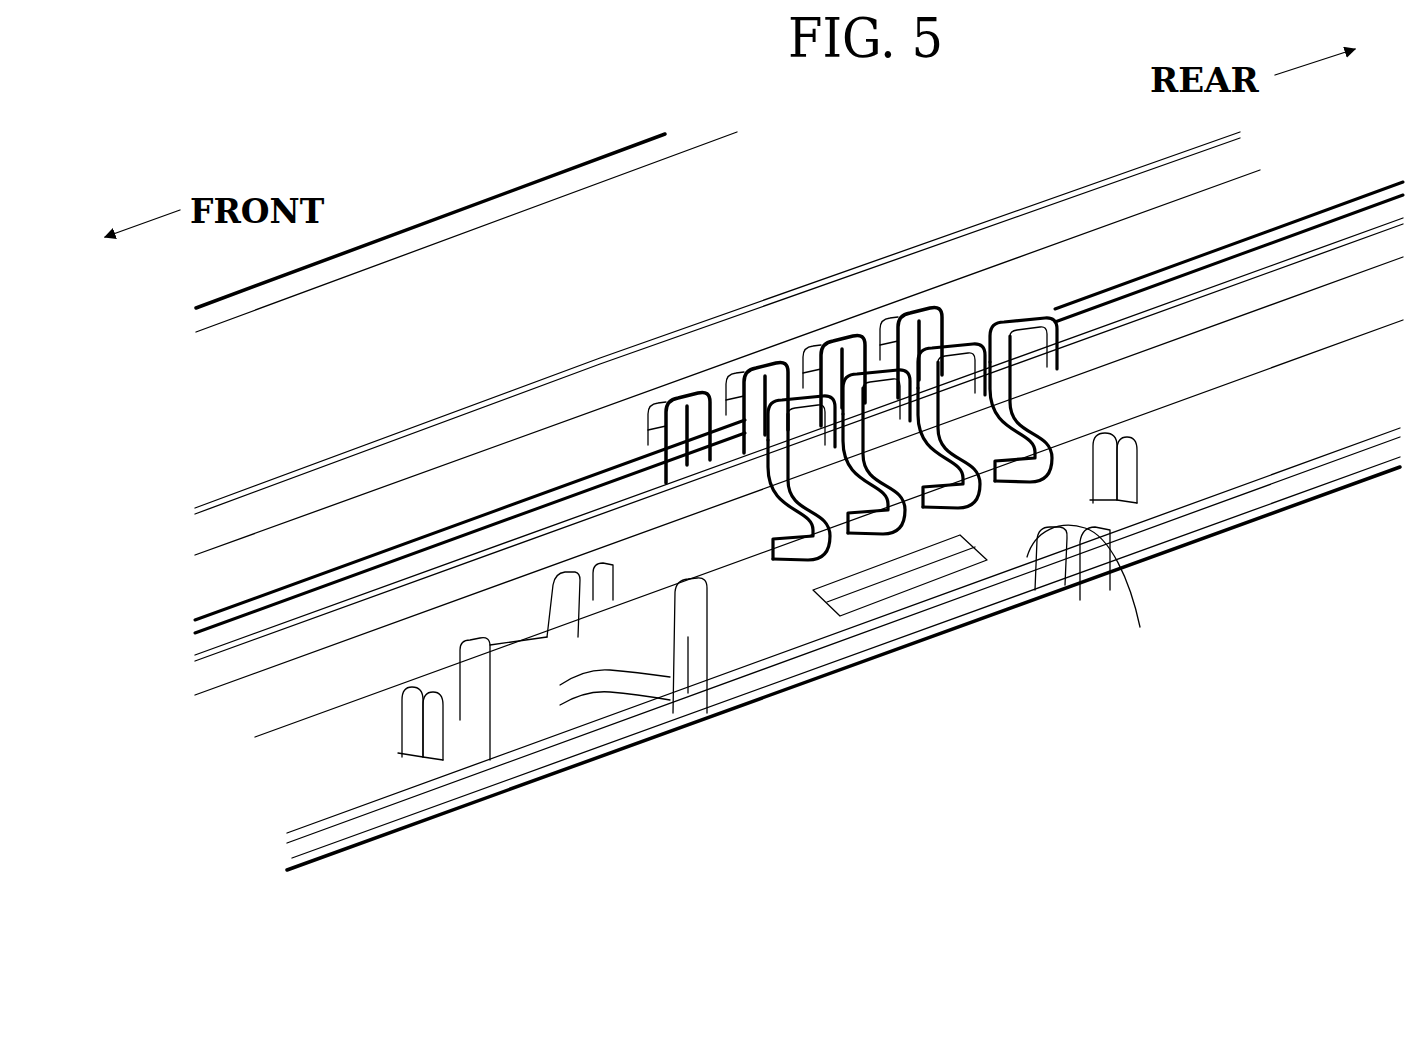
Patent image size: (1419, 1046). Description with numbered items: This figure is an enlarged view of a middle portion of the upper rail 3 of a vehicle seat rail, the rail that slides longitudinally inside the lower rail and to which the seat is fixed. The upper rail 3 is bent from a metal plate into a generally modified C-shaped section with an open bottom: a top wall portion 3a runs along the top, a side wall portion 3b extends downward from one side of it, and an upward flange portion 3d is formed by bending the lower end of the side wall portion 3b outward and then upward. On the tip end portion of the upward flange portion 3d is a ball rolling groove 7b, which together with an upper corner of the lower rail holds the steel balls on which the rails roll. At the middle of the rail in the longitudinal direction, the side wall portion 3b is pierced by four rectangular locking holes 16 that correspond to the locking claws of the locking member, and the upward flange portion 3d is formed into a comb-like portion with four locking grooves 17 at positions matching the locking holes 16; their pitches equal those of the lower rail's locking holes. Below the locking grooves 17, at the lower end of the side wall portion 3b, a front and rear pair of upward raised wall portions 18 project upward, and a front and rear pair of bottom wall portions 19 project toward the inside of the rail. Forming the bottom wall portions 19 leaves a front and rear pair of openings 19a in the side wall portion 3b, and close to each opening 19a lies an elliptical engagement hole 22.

The upper rail 3 is at (379, 218).
The top wall portion 3a is at (565, 250).
The side wall portion 3b is at (1085, 248).
The upward flange portion 3d is at (1250, 440).
The ball rolling groove 7b is at (1275, 290).
The locking holes 16 is at (920, 338).
The locking grooves 17 is at (1000, 413).
The upward raised wall portions 18 is at (745, 655).
The bottom wall portions 19 is at (437, 762).
The openings 19a is at (520, 645).
The engagement holes 22 is at (400, 727).